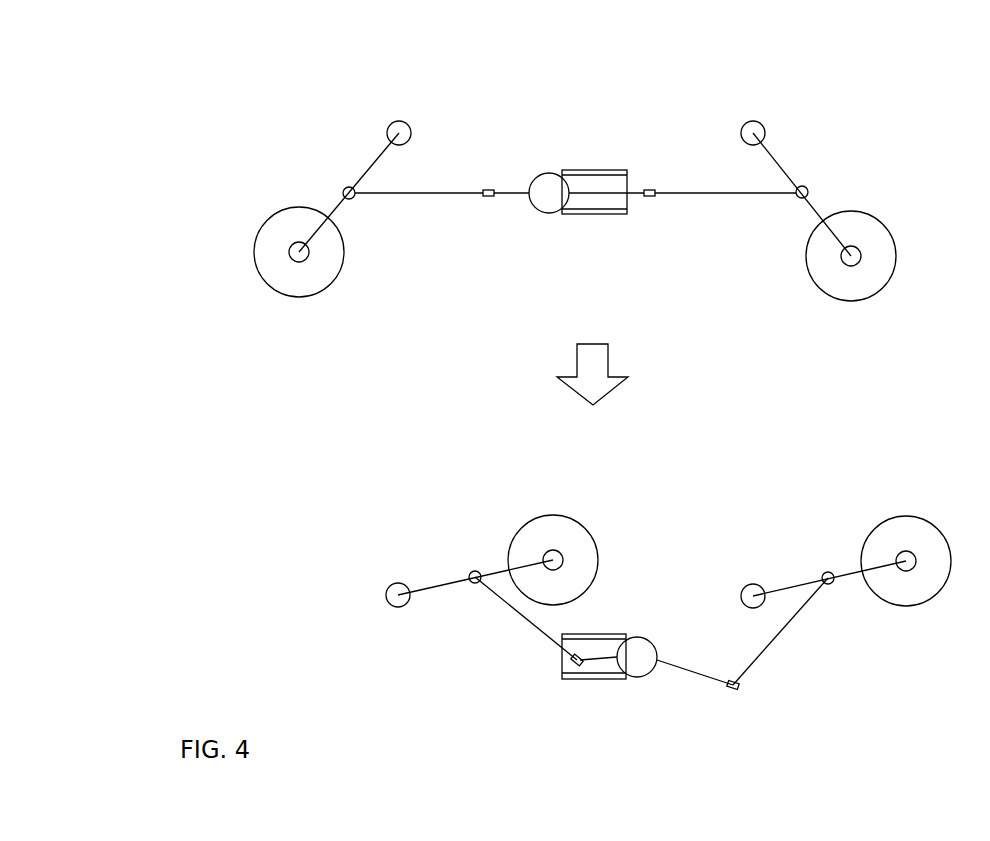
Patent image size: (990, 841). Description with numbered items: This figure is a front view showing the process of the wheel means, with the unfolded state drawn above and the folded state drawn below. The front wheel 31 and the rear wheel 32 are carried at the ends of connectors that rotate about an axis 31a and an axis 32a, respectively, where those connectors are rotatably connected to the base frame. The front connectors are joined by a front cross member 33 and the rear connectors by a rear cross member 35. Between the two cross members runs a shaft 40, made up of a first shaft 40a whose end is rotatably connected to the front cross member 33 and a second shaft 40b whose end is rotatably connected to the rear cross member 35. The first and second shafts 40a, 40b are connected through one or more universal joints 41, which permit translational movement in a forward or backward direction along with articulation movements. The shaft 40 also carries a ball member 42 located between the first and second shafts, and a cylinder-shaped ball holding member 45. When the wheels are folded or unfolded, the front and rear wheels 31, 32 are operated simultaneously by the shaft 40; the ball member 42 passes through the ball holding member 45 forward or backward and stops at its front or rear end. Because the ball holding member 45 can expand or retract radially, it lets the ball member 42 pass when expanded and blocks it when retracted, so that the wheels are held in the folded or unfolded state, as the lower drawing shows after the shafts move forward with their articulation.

The shaft 40 is at (465, 135).
The first shaft 40a is at (718, 194).
The second shaft 40b is at (437, 195).
The universal joint 41 is at (488, 190).
The ball member 42 is at (543, 203).
The ball holding member 45 is at (598, 212).
The front wheel 31 is at (878, 280).
The axis 31a is at (760, 128).
The rear wheel 32 is at (272, 265).
The axis 32a is at (392, 128).
The front cross member 33 is at (806, 187).
The rear cross member 35 is at (344, 190).